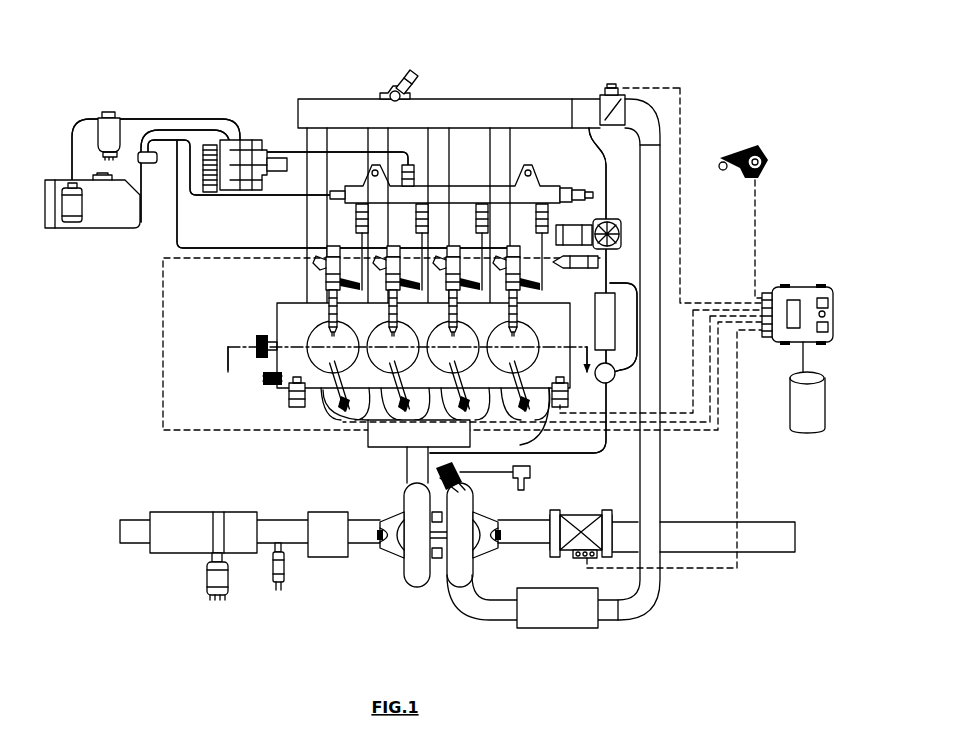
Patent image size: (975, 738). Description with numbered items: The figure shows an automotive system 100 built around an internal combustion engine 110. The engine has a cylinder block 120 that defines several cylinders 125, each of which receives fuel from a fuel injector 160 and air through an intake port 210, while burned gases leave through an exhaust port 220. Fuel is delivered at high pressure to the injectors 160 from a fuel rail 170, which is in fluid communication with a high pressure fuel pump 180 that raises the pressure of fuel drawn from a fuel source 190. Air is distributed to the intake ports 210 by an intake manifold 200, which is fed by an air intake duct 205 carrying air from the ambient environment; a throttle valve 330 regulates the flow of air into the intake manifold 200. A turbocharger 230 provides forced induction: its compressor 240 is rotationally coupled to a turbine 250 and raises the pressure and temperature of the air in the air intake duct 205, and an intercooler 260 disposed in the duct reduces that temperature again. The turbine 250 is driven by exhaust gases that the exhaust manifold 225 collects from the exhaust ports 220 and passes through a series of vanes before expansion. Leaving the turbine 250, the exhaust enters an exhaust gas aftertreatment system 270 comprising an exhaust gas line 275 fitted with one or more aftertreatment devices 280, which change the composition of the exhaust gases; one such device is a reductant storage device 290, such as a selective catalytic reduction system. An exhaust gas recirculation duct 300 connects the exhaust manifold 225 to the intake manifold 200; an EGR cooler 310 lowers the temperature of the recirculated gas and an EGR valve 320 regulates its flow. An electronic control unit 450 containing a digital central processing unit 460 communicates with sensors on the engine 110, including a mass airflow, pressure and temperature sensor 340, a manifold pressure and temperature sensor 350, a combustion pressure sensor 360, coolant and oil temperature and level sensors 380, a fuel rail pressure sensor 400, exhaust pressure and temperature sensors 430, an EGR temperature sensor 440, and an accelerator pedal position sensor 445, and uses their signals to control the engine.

The automotive system 100 is at (216, 82).
The internal combustion engine 110 is at (522, 87).
The cylinder block 120 is at (277, 305).
The cylinder 125 is at (535, 328).
The fuel injector 160 is at (333, 288).
The fuel rail 170 is at (333, 200).
The high pressure fuel pump 180 is at (252, 140).
The fuel source 190 is at (115, 213).
The intake manifold 200 is at (440, 115).
The air intake duct 205 is at (653, 495).
The intake port 210 is at (320, 305).
The exhaust port 220 is at (332, 392).
The exhaust manifold 225 is at (393, 440).
The turbocharger 230 is at (408, 600).
The compressor 240 is at (465, 562).
The turbine 250 is at (412, 555).
The intercooler 260 is at (580, 617).
The exhaust gas aftertreatment system 270 is at (186, 498).
The exhaust gas line 275 is at (130, 535).
The exhaust aftertreatment device 280 is at (175, 535).
The reductant storage device 290 is at (450, 476).
The EGR duct 300 is at (579, 466).
The EGR cooler 310 is at (603, 337).
The EGR valve 320 is at (615, 212).
The throttle valve 330 is at (615, 88).
The mass airflow, pressure, temperature sensor 340 is at (575, 553).
The manifold pressure and temperature sensor 350 is at (383, 88).
The combustion pressure sensor 360 is at (347, 407).
The coolant and oil temperature and level sensors 380 is at (290, 395).
The fuel rail pressure sensor 400 is at (592, 193).
The exhaust pressure and temperature sensors 430 is at (278, 590).
The EGR temperature sensor 440 is at (623, 248).
The accelerator pedal position sensor 445 is at (762, 152).
The electronic control unit 450 is at (807, 287).
The central processing unit 460 is at (805, 418).